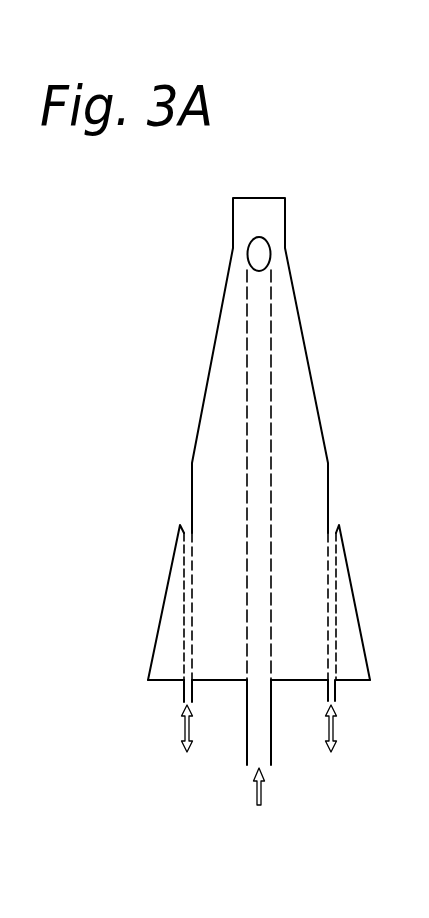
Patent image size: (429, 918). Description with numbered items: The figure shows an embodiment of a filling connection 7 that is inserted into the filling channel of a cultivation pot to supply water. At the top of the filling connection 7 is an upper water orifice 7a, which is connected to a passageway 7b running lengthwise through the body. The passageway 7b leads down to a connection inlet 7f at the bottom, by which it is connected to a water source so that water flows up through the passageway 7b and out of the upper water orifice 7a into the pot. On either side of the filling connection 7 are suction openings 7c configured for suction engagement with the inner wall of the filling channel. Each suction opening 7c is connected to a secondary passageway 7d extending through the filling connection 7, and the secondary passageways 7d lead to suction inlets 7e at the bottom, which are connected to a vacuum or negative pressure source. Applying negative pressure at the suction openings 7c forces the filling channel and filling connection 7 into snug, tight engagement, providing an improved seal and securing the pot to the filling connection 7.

The filling connection 7 is at (288, 387).
The upper water orifice 7a is at (261, 252).
The passageway 7b is at (247, 334).
The suction opening 7c is at (187, 511).
The secondary passageway 7d is at (183, 570).
The suction inlet 7e is at (183, 693).
The connection inlet 7f is at (247, 748).